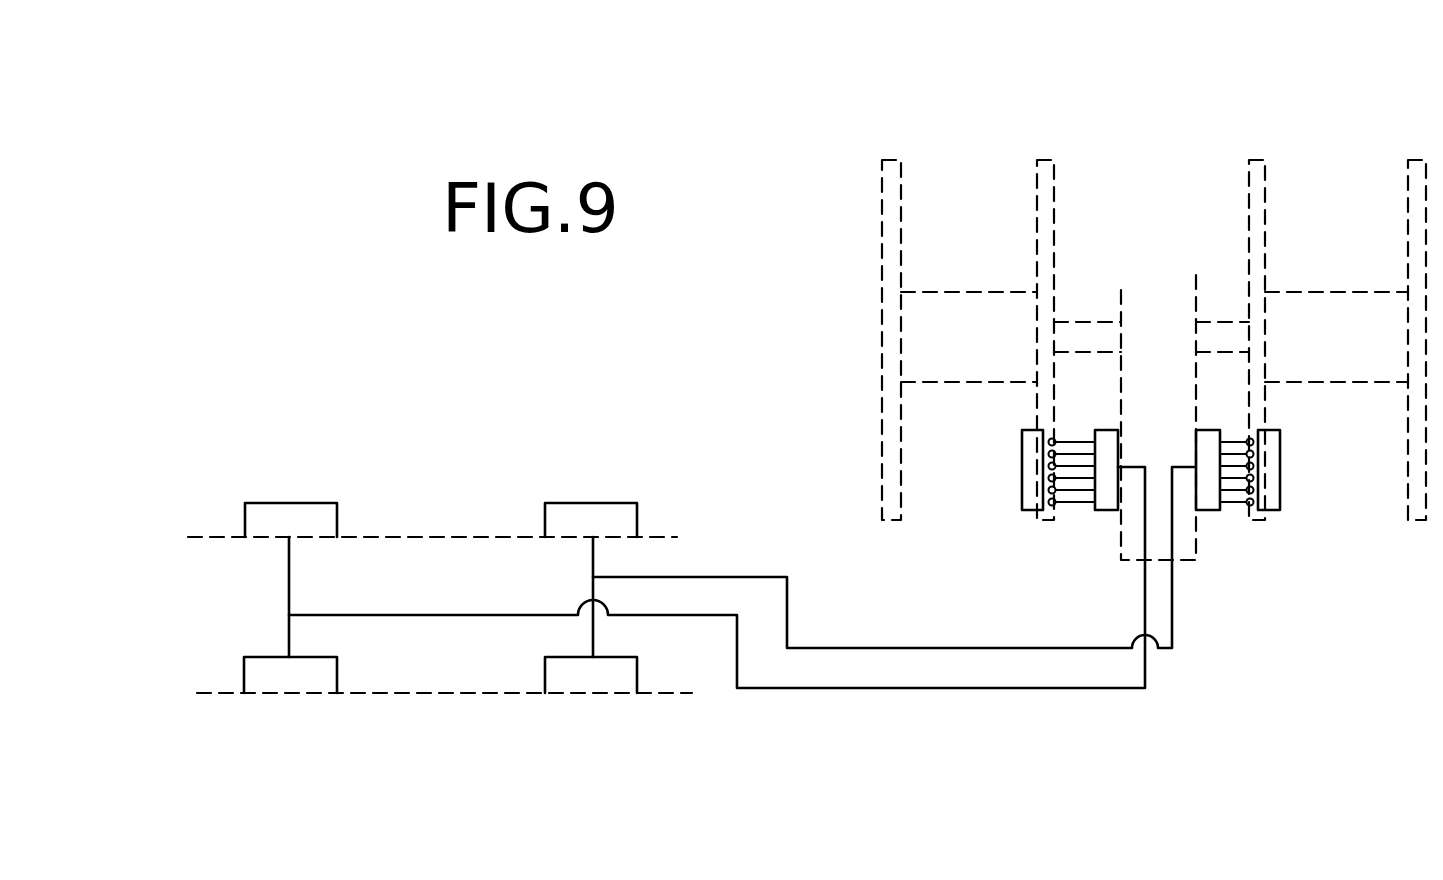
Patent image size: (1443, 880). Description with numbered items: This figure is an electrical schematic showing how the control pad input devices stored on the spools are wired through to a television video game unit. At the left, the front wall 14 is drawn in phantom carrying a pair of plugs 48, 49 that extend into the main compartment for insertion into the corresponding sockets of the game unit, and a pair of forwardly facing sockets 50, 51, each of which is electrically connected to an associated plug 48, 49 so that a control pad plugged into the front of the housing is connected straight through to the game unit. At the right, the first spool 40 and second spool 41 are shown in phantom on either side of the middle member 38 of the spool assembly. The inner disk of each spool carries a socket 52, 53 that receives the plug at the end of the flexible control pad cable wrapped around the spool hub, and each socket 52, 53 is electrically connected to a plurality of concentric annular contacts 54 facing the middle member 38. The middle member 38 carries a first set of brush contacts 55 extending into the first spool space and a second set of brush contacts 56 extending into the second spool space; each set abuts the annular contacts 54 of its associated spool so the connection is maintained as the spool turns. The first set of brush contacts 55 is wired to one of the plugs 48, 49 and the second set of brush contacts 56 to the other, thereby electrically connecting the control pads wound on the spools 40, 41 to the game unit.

The front wall 14 is at (402, 537).
The middle member 38 is at (1122, 290).
The first spool 40 is at (1350, 160).
The second spool 41 is at (963, 146).
The plug 48 is at (256, 503).
The plug 49 is at (590, 503).
The forwardly facing socket 50 is at (244, 680).
The forwardly facing socket 51 is at (637, 680).
The socket 52 is at (1280, 485).
The socket 53 is at (1022, 487).
The concentric annular contacts 54 is at (1052, 505).
The first set of brush contacts 55 is at (1234, 432).
The second set of brush contacts 56 is at (1082, 430).